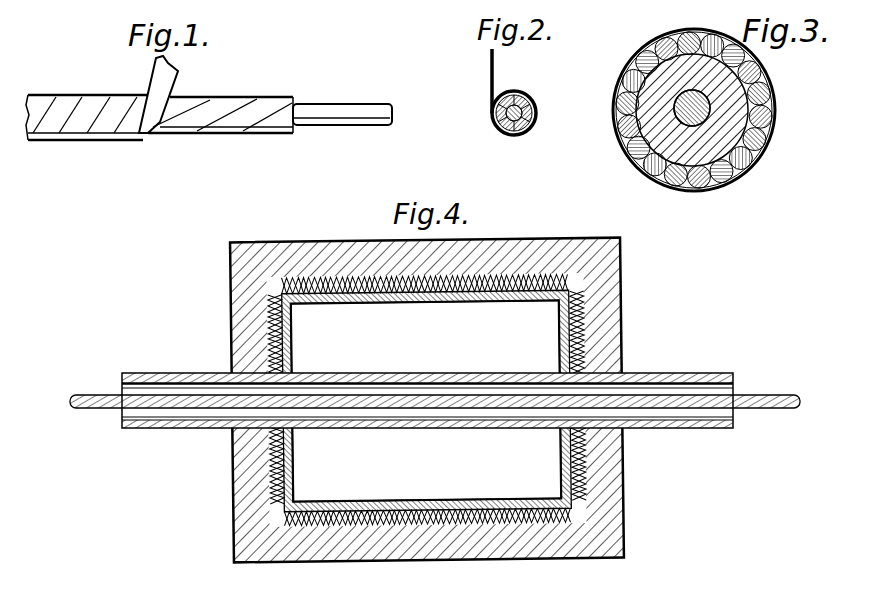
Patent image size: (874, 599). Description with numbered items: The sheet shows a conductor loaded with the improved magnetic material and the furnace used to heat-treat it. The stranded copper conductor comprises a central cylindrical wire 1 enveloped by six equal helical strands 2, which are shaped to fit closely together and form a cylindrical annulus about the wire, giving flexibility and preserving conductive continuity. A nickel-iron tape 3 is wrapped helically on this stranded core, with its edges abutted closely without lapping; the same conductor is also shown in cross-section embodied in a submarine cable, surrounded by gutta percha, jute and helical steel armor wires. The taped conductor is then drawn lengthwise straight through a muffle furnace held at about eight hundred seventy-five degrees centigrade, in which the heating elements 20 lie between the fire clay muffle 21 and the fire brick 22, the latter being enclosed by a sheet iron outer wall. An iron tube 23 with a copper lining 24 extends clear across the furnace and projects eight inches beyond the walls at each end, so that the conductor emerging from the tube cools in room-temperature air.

In FIG. 1, the central cylindrical wire 1 is at (345, 120).
In FIG. 2, the central cylindrical wire 1 is at (528, 112).
In FIG. 3, the central cylindrical wire 1 is at (760, 157).
In FIG. 1, the helical strands 2 is at (218, 127).
In FIG. 2, the helical strands 2 is at (513, 130).
In FIG. 3, the helical strands 2 is at (615, 105).
In FIG. 1, the nickel-iron tape 3 is at (68, 147).
In FIG. 2, the nickel-iron tape 3 is at (490, 68).
In FIG. 3, the nickel-iron tape 3 is at (633, 57).
In FIG. 4, the heating elements 20 is at (572, 288).
In FIG. 4, the fire clay muffle 21 is at (565, 338).
In FIG. 4, the fire brick 22 is at (617, 333).
In FIG. 4, the iron tube 23 is at (151, 373).
In FIG. 4, the copper lining 24 is at (207, 347).